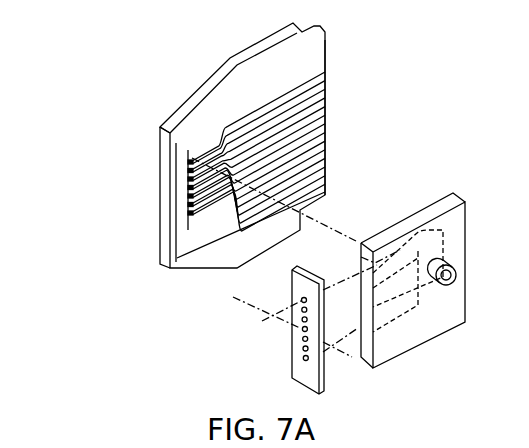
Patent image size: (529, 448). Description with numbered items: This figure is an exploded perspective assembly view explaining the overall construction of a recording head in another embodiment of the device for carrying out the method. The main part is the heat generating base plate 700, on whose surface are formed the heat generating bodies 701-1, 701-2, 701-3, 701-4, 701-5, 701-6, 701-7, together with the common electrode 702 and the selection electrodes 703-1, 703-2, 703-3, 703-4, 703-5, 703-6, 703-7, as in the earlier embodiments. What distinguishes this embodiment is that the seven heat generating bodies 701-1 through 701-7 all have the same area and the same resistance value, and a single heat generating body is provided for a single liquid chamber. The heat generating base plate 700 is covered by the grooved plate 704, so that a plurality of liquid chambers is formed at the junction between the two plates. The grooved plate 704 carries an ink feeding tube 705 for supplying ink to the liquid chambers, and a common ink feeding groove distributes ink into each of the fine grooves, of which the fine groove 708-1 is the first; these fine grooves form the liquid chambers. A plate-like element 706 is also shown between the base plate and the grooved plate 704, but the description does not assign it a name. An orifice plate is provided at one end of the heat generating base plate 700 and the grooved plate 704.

The heat generating base plate 700 is at (261, 42).
The heat generating body 701-1 is at (188, 215).
The heat generating body 701-2 is at (188, 205).
The heat generating body 701-3 is at (188, 196).
The heat generating body 701-4 is at (188, 188).
The heat generating body 701-5 is at (188, 179).
The heat generating body 701-6 is at (188, 170).
The heat generating body 701-7 is at (188, 161).
The common electrode 702 is at (326, 52).
The selection electrode 703-1 is at (327, 170).
The selection electrode 703-2 is at (327, 152).
The selection electrode 703-3 is at (327, 140).
The selection electrode 703-4 is at (327, 122).
The selection electrode 703-5 is at (327, 107).
The selection electrode 703-6 is at (327, 93).
The selection electrode 703-7 is at (327, 69).
The grooved plate 704 is at (460, 232).
The ink feeding tube 705 is at (456, 276).
The contact plate 706 is at (302, 377).
The fine groove 708-1 is at (496, 434).